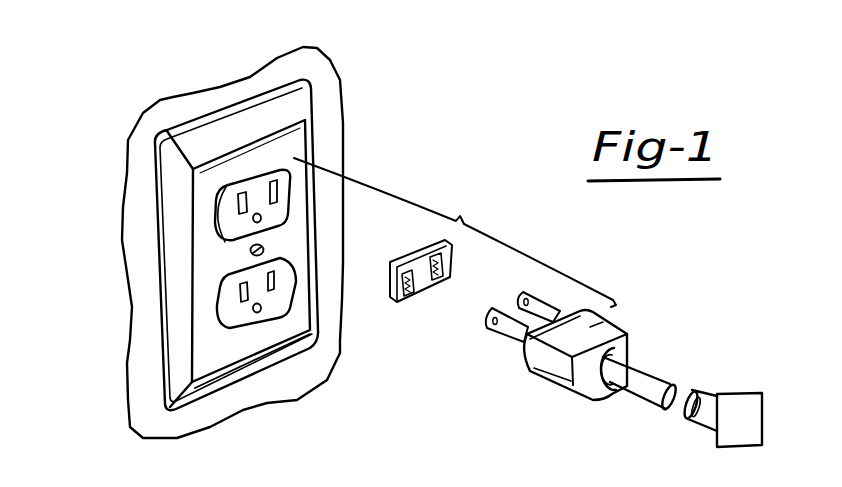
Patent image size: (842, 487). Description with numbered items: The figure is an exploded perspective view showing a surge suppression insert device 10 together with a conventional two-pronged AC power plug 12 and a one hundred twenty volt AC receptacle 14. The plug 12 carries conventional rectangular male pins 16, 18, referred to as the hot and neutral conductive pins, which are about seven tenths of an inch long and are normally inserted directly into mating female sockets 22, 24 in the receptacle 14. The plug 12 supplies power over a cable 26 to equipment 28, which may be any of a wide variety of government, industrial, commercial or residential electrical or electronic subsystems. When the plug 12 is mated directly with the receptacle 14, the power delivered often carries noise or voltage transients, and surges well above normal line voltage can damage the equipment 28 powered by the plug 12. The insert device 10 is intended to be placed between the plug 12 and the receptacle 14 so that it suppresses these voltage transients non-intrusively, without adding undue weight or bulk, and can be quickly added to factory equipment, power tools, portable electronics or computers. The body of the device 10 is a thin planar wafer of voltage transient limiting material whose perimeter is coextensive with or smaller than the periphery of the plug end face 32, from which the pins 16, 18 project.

The surge suppression insert device 10 is at (407, 312).
The AC power plug 12 is at (627, 332).
The AC receptacle 14 is at (296, 100).
The male pin 16 is at (503, 340).
The male pin 18 is at (540, 292).
The female socket 22 is at (240, 203).
The female socket 24 is at (280, 197).
The cable 26 is at (647, 393).
The equipment 28 is at (727, 417).
The plug end face 32 is at (575, 307).